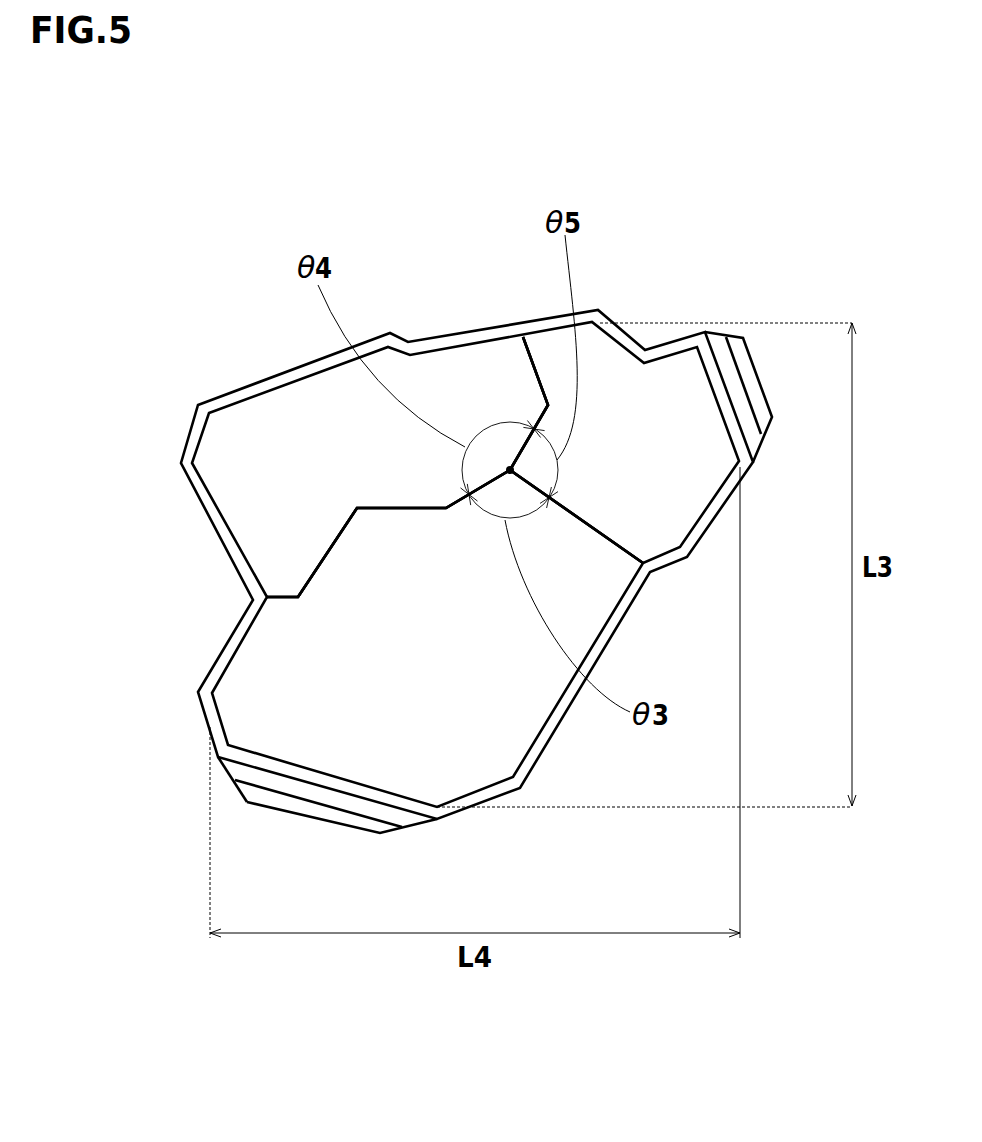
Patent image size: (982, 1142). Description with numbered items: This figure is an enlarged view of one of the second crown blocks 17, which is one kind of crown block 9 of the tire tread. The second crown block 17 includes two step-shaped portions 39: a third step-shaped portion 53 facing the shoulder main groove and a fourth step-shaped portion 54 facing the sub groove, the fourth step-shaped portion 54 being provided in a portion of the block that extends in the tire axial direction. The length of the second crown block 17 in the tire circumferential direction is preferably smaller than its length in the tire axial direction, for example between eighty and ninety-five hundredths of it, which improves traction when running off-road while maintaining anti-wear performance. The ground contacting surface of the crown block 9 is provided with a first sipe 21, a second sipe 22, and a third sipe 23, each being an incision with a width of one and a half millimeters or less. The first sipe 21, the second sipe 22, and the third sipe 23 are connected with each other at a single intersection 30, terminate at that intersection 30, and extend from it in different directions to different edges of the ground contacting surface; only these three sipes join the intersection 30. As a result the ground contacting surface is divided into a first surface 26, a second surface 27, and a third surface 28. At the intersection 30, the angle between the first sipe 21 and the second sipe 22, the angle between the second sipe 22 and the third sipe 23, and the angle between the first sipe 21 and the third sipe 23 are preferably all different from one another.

The crown block 9 is at (282, 335).
The second crown block 17 is at (233, 352).
The first sipe 21 is at (325, 552).
The second sipe 22 is at (590, 526).
The third sipe 23 is at (532, 370).
The first surface 26 is at (450, 643).
The second surface 27 is at (368, 458).
The third surface 28 is at (660, 462).
The intersection 30 is at (510, 470).
The step-shaped portion 39 is at (285, 782).
The third step-shaped portion 53 is at (733, 385).
The fourth step-shaped portion 54 is at (343, 800).